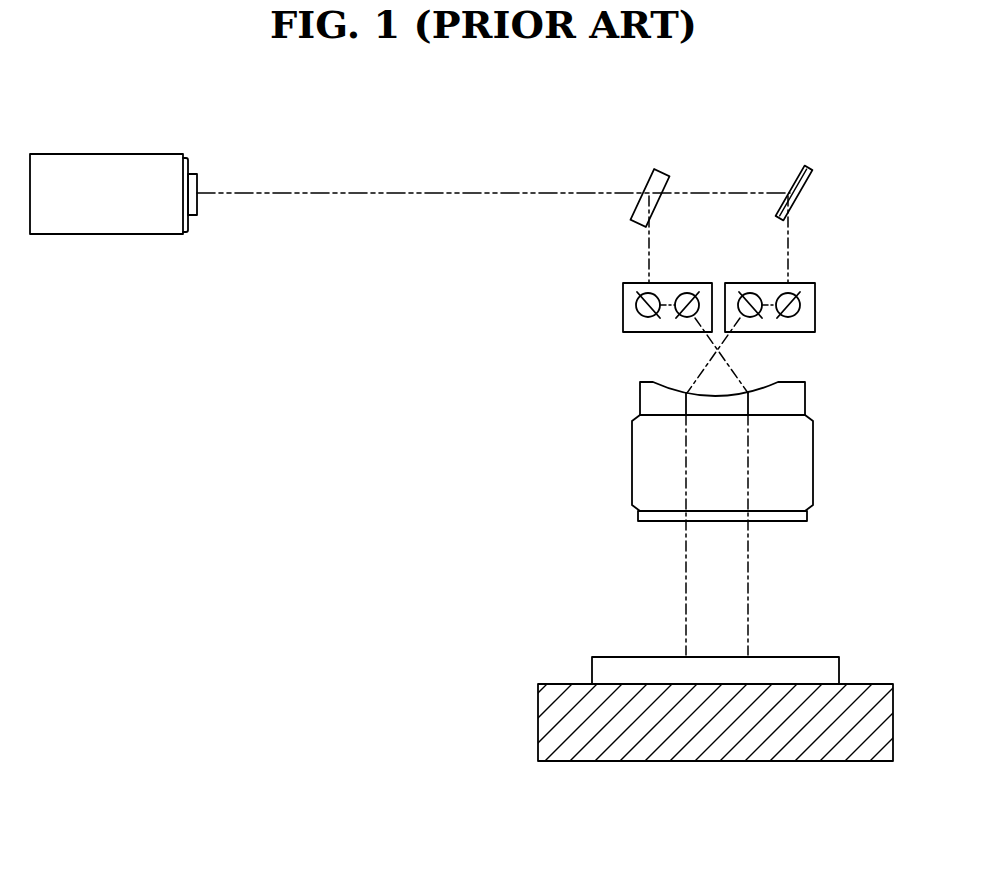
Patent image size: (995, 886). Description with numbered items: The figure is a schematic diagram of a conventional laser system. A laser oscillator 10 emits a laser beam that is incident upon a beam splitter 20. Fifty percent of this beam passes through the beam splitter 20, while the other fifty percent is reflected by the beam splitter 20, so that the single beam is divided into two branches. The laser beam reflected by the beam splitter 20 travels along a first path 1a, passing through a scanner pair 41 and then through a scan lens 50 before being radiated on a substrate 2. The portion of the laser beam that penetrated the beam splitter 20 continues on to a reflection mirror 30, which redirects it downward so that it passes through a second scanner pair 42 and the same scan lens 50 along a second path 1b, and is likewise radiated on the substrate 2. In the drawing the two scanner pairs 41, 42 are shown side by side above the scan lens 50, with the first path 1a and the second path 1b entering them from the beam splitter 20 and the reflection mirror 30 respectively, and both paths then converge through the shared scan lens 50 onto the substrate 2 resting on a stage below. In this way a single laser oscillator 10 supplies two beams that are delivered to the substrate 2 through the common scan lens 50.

The laser oscillator 10 is at (137, 178).
The beam splitter 20 is at (653, 176).
The reflection mirror 30 is at (791, 173).
The first path 1a is at (647, 238).
The second path 1b is at (790, 238).
The scanner pair 41 is at (630, 333).
The scanner pair 42 is at (800, 333).
The scan lens 50 is at (803, 467).
The substrate 2 is at (829, 667).